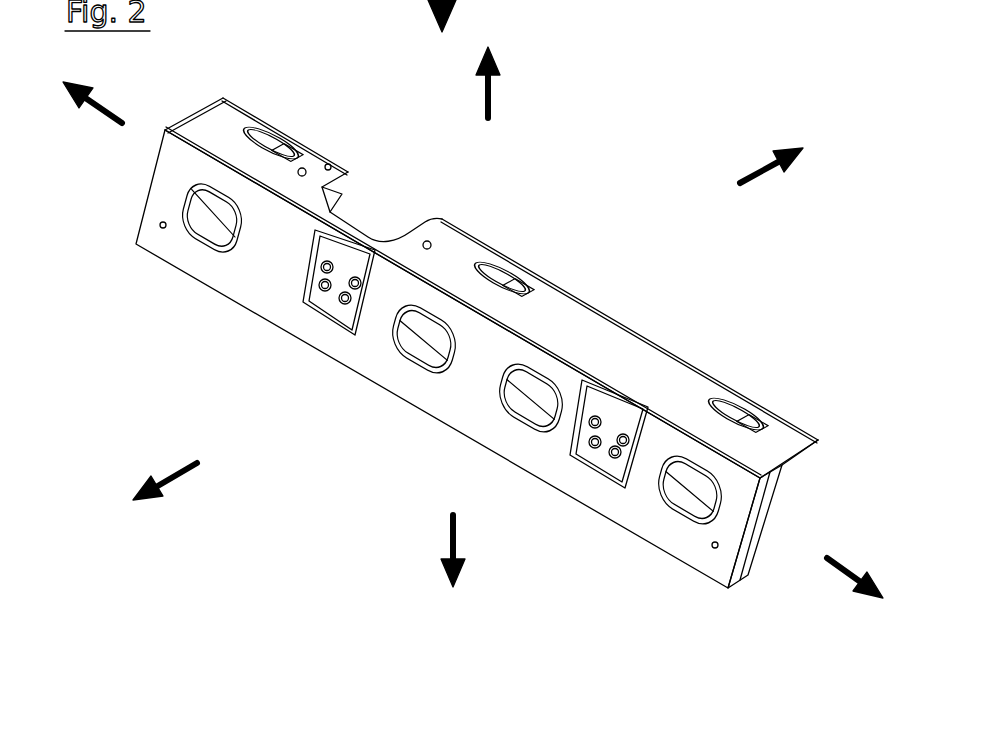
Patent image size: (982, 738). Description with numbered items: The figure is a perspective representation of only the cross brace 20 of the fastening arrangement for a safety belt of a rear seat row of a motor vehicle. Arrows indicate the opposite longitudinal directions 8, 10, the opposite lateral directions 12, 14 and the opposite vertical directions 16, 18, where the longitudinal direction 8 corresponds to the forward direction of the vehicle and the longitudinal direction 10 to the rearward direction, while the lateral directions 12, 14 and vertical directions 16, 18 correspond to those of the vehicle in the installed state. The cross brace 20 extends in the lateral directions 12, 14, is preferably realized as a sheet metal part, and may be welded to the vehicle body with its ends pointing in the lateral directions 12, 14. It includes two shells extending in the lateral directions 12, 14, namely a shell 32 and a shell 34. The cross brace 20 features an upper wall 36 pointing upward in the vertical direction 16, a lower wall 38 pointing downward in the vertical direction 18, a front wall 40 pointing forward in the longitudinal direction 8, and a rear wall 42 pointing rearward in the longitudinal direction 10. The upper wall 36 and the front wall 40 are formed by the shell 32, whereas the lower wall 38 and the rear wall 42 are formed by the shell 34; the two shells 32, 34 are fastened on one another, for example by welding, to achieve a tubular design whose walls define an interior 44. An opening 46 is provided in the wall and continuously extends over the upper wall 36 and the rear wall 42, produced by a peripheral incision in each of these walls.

The longitudinal direction 8 is at (175, 476).
The longitudinal direction 10 is at (750, 173).
The lateral direction 12 is at (103, 116).
The lateral direction 14 is at (843, 562).
The vertical direction 16 is at (483, 97).
The vertical direction 18 is at (450, 537).
The cross brace 20 is at (256, 345).
The shell 32 is at (158, 183).
The shell 34 is at (201, 202).
The upper wall 36 is at (645, 352).
The lower wall 38 is at (760, 540).
The front wall 40 is at (463, 403).
The rear wall 42 is at (777, 490).
The interior 44 is at (775, 524).
The opening 46 is at (405, 211).